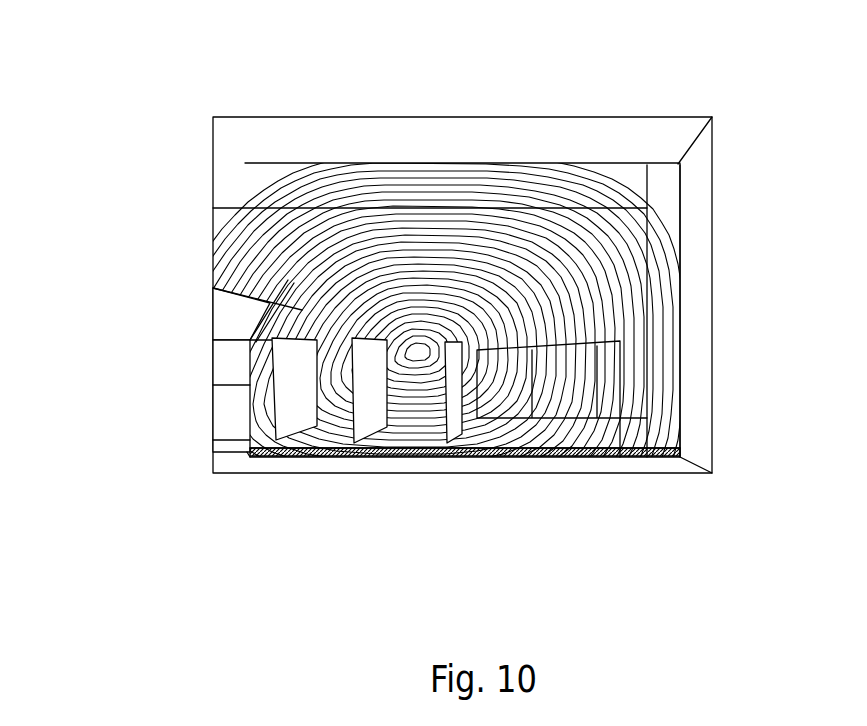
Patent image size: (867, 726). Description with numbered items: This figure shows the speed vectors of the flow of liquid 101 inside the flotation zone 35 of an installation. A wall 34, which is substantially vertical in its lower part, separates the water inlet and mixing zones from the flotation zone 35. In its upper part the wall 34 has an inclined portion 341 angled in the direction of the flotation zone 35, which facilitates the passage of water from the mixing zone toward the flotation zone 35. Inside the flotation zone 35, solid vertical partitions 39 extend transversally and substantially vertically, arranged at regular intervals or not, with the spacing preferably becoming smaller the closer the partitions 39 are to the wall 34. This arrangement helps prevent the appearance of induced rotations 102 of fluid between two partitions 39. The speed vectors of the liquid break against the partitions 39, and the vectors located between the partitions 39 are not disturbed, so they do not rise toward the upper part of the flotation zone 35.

The flow of liquid 101 is at (448, 275).
The flotation zone 35 is at (566, 272).
The inclined portion 341 is at (240, 318).
The wall 34 is at (232, 360).
The vertical partitions 39 is at (255, 432).
The induced rotations 102 is at (288, 455).